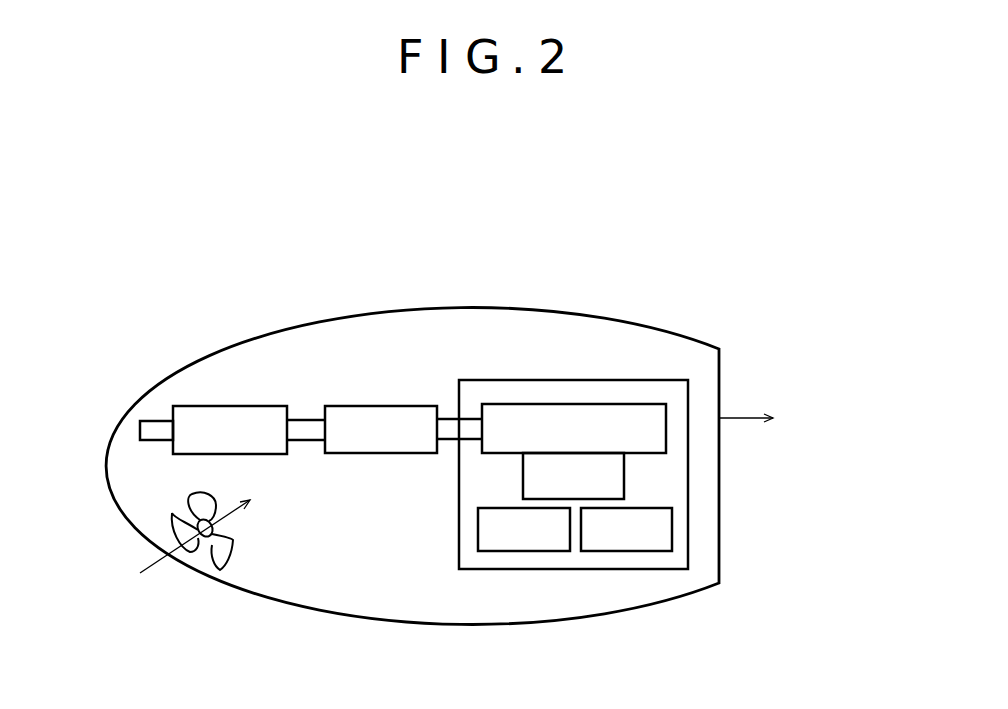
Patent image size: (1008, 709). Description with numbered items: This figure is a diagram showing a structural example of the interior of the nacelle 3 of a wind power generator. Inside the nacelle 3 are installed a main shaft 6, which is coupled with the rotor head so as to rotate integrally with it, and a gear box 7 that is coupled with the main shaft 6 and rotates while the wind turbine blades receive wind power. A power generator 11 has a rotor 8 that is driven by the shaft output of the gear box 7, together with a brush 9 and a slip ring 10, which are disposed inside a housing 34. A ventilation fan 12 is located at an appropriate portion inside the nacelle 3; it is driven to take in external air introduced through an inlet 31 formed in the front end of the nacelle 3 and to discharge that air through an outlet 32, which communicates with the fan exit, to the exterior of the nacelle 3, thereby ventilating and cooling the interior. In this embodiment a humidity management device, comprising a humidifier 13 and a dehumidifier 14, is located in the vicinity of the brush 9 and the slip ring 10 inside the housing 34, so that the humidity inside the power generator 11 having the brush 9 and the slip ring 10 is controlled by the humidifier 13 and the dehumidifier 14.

The nacelle 3 is at (408, 625).
The main shaft 6 is at (140, 428).
The gear box 7 is at (197, 406).
The rotor 8 is at (375, 406).
The brush 9 is at (556, 470).
The slip ring 10 is at (498, 404).
The power generator 11 is at (565, 232).
The ventilation fan 12 is at (232, 555).
The humidifier 13 is at (530, 551).
The dehumidifier 14 is at (625, 551).
The inlet 31 is at (165, 565).
The outlet 32 is at (719, 370).
The housing 34 is at (628, 380).